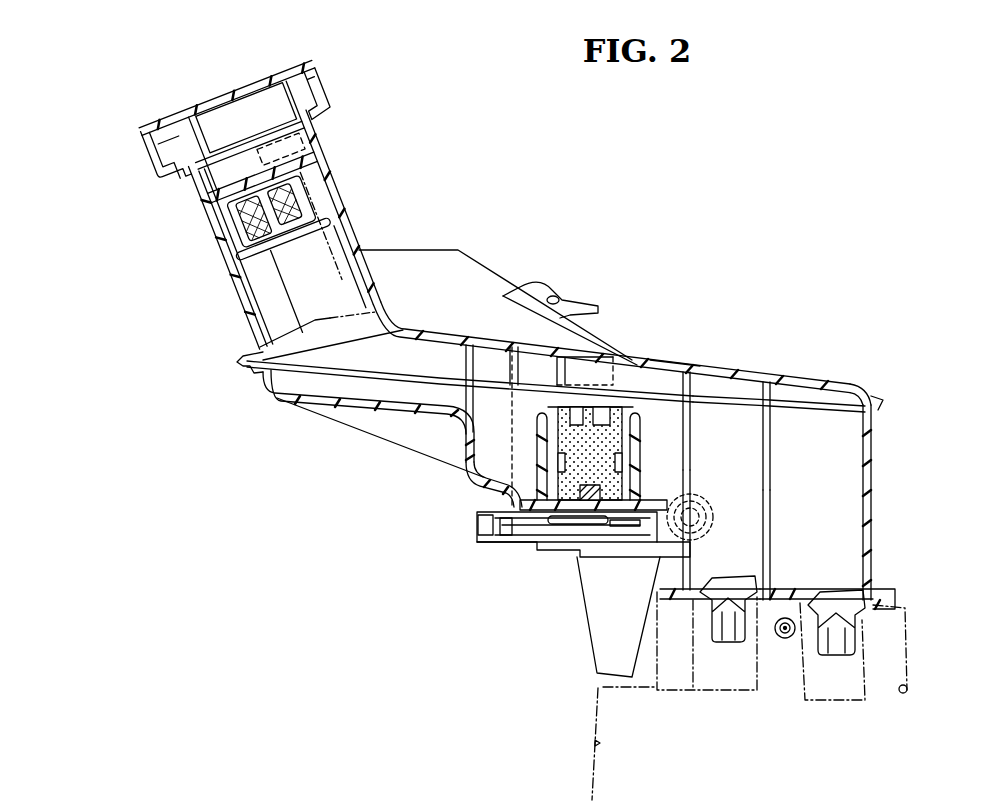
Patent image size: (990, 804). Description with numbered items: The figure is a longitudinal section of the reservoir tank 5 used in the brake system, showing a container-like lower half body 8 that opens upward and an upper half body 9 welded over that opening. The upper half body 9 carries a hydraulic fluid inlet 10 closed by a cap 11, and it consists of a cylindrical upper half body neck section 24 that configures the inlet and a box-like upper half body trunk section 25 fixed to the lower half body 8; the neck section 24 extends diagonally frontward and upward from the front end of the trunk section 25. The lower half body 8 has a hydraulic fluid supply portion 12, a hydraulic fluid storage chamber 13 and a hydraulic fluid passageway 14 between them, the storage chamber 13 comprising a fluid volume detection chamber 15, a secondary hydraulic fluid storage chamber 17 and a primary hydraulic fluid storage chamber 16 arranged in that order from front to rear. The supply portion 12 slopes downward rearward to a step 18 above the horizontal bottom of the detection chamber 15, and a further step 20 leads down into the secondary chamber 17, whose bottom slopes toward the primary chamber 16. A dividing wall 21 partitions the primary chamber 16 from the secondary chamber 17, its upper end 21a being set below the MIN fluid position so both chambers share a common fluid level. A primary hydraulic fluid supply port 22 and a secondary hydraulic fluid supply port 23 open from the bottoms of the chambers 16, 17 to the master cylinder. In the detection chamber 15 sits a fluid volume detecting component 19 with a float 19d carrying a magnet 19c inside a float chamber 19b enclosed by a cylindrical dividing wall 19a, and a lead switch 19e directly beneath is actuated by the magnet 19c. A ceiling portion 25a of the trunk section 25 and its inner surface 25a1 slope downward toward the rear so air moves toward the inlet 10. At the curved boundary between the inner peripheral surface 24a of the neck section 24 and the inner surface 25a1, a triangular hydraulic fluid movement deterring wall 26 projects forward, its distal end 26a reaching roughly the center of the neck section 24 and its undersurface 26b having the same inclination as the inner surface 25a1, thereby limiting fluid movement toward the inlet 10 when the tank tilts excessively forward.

The reservoir tank 5 is at (342, 540).
The lower half body 8 is at (885, 531).
The upper half body 9 is at (636, 345).
The hydraulic fluid inlet 10 is at (300, 117).
The cap 11 is at (322, 74).
The hydraulic fluid supply portion 12 is at (333, 385).
The hydraulic fluid storage chamber 13 is at (752, 415).
The hydraulic fluid passageway 14 is at (463, 393).
The fluid volume detection chamber 15 is at (695, 424).
The primary hydraulic fluid storage chamber 16 is at (805, 503).
The secondary hydraulic fluid storage chamber 17 is at (717, 479).
The step 18 is at (480, 462).
The fluid volume detecting component 19 is at (562, 396).
The cylindrical dividing wall 19a is at (645, 428).
The float chamber 19b is at (620, 440).
The magnet 19c is at (588, 500).
The float 19d is at (577, 455).
The lead switch 19e is at (580, 518).
The step 20 is at (690, 556).
The dividing wall 21 is at (771, 548).
The upper end 21a is at (768, 462).
The primary hydraulic fluid supply port 22 is at (841, 645).
The secondary hydraulic fluid supply port 23 is at (732, 625).
The upper half body neck section 24 is at (345, 181).
The inner peripheral surface 24a is at (352, 270).
The upper half body trunk section 25 is at (878, 388).
The ceiling portion 25a is at (720, 380).
The inner surface 25a1 is at (662, 375).
The hydraulic fluid movement deterring wall 26 is at (327, 327).
The distal end 26a is at (262, 340).
The undersurface 26b is at (350, 327).